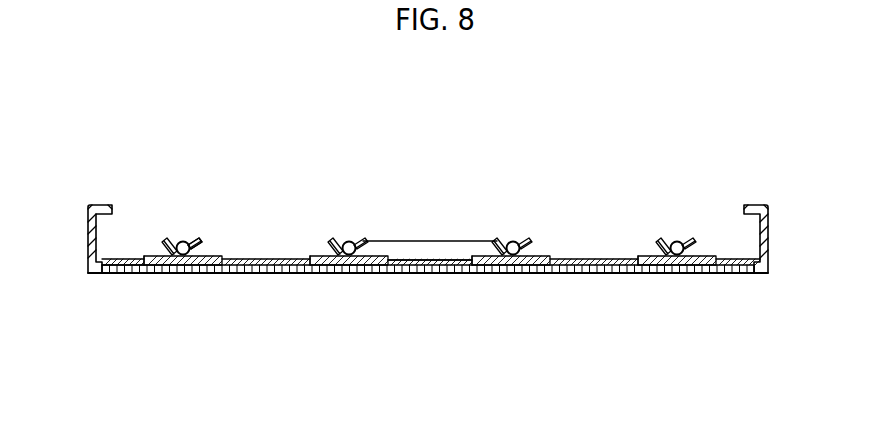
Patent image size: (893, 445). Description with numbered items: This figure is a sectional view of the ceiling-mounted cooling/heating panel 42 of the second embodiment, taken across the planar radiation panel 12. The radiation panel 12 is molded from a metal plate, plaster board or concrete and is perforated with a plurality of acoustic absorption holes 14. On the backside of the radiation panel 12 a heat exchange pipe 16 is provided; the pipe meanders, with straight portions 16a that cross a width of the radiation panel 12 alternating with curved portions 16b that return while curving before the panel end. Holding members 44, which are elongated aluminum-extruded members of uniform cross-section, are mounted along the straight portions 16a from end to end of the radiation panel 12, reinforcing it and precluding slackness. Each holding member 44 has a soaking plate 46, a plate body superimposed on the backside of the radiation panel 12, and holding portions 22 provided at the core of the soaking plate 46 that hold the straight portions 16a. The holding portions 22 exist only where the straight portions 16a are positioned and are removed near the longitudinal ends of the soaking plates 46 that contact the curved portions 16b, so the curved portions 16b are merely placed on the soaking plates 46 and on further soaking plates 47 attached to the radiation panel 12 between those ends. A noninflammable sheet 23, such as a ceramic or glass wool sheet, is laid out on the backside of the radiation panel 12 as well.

The ceiling-mounted cooling/heating panel 42 is at (675, 114).
The radiation panel 12 is at (593, 274).
The acoustic absorption holes 14 is at (459, 262).
The heat exchange pipe 16 is at (181, 241).
The straight portions 16a is at (349, 241).
The curved portions 16b is at (407, 248).
The holding portions 22 is at (196, 245).
The noninflammable sheet 23 is at (583, 257).
The holding members 44 is at (156, 233).
The soaking plates 46 is at (205, 255).
The soaking plates 47 is at (262, 257).